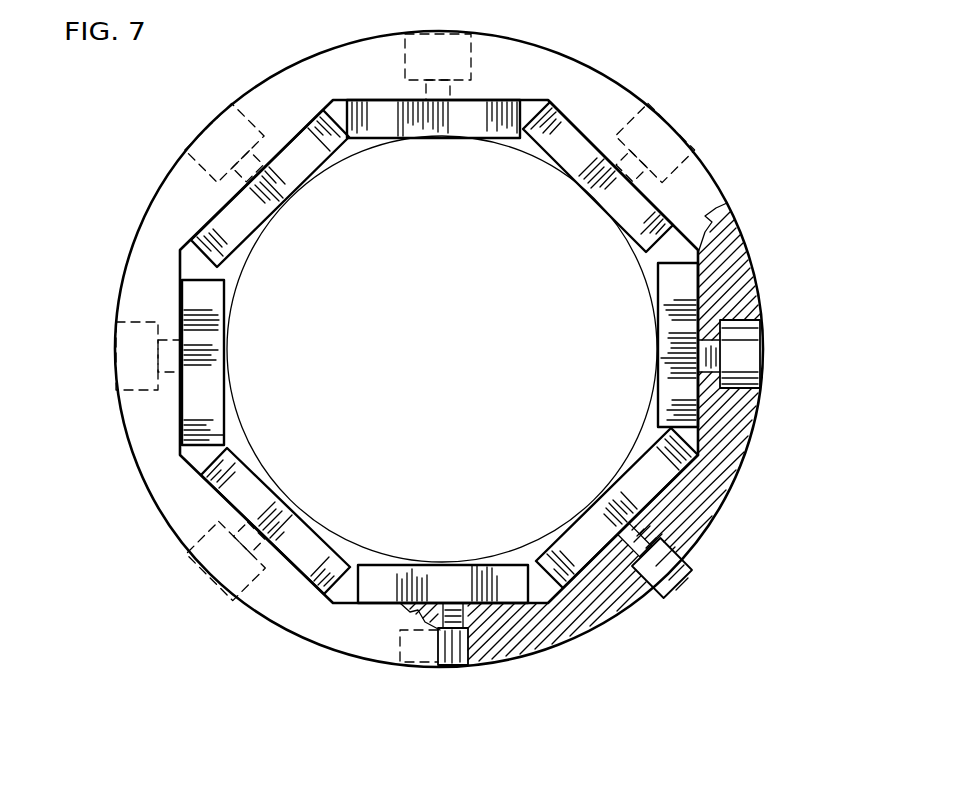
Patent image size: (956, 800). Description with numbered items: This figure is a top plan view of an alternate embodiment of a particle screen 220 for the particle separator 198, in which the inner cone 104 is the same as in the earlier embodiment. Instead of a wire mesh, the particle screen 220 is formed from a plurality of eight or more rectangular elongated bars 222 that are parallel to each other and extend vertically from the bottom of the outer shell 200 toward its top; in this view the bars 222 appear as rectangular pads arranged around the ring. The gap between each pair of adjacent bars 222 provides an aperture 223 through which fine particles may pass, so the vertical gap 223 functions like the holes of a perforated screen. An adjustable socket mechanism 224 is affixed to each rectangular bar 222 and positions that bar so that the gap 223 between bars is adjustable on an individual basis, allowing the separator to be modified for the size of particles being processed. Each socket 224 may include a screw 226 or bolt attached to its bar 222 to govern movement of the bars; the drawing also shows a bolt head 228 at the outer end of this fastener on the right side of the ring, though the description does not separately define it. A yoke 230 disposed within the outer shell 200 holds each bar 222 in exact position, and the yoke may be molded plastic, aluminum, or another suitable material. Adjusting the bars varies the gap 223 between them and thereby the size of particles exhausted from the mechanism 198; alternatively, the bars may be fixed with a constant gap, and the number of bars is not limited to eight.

The inner cone 104 is at (543, 100).
The particle separator 198 is at (835, 207).
The outer shell 200 is at (712, 180).
The particle screen 220 is at (510, 217).
The rectangular elongated bar 222 is at (300, 168).
The aperture 223 is at (660, 433).
The adjustable socket mechanism 224 is at (182, 116).
The screw 226 is at (768, 350).
The bolt head 228 is at (725, 348).
The yoke 230 is at (340, 637).